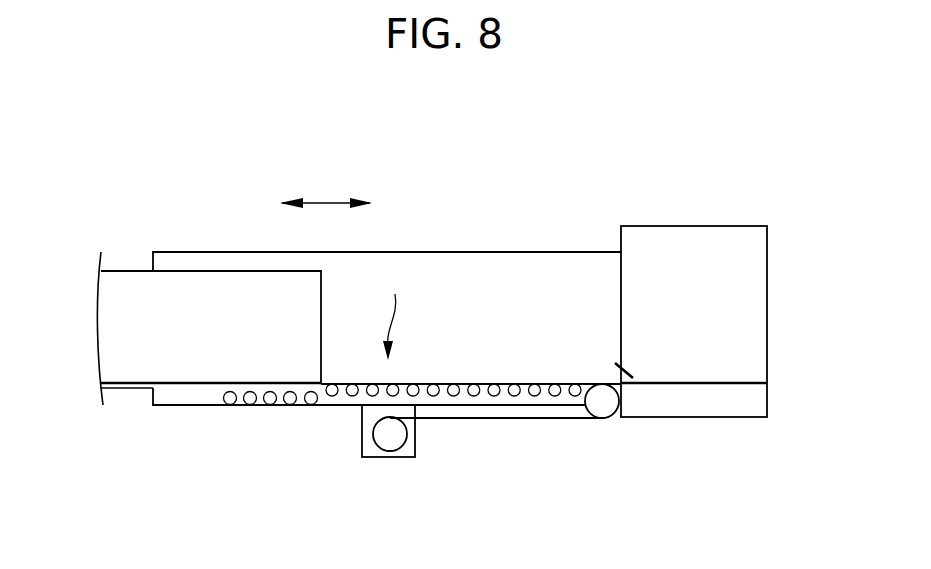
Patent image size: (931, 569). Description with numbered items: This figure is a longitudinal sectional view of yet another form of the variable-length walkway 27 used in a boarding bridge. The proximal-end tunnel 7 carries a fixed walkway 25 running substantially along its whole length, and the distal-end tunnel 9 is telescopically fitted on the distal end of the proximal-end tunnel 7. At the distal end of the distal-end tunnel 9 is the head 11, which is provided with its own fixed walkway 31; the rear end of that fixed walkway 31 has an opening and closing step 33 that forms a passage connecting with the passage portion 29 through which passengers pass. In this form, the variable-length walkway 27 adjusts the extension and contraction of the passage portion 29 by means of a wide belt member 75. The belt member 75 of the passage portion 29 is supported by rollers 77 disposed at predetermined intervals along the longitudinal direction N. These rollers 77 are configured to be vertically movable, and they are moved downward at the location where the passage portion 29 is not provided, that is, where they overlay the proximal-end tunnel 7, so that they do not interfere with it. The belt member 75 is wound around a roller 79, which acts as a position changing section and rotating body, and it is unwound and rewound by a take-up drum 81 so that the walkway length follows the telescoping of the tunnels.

The proximal-end tunnel 7 is at (132, 270).
The distal-end tunnel 9 is at (467, 251).
The longitudinal direction N is at (328, 200).
The head 11 is at (692, 226).
The fixed walkway 25 is at (195, 383).
The variable-length walkway 27 is at (397, 311).
The passage portion 29 is at (484, 383).
The fixed walkway 31 is at (720, 383).
The opening and closing step 33 is at (623, 370).
The belt member 75 is at (527, 420).
The rollers 77 is at (333, 398).
The roller 79 is at (605, 412).
The take-up drum 81 is at (389, 443).